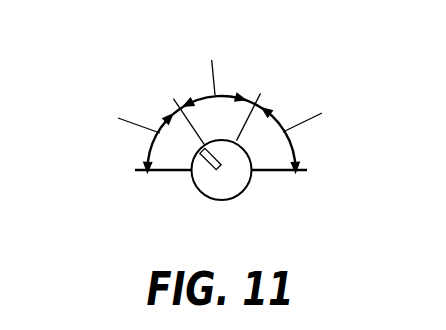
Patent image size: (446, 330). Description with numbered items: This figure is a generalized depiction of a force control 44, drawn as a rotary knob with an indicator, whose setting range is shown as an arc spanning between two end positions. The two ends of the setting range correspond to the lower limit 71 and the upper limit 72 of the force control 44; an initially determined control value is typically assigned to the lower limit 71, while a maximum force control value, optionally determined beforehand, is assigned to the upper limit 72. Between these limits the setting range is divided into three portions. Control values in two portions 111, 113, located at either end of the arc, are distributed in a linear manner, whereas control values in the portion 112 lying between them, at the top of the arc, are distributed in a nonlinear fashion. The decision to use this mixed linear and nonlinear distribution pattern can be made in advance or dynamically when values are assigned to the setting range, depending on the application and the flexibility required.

The force control 44 is at (222, 201).
The lower limit 71 is at (155, 172).
The upper limit 72 is at (287, 172).
The first linear portion of the setting range 111 is at (147, 145).
The nonlinear portion of the setting range 112 is at (202, 95).
The second linear portion of the setting range 113 is at (292, 143).